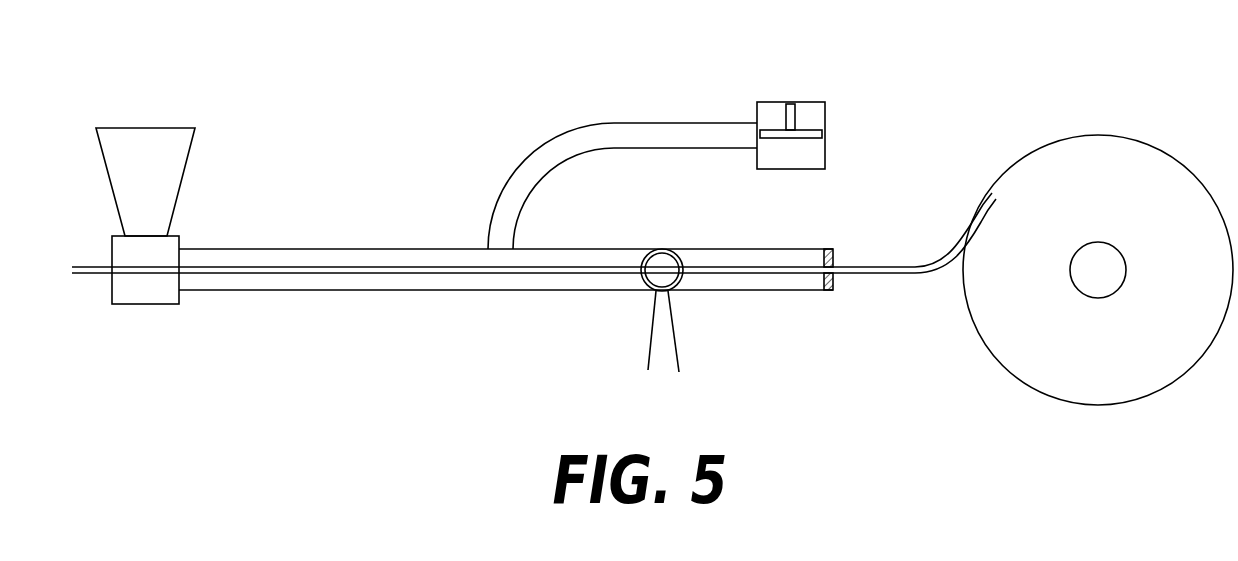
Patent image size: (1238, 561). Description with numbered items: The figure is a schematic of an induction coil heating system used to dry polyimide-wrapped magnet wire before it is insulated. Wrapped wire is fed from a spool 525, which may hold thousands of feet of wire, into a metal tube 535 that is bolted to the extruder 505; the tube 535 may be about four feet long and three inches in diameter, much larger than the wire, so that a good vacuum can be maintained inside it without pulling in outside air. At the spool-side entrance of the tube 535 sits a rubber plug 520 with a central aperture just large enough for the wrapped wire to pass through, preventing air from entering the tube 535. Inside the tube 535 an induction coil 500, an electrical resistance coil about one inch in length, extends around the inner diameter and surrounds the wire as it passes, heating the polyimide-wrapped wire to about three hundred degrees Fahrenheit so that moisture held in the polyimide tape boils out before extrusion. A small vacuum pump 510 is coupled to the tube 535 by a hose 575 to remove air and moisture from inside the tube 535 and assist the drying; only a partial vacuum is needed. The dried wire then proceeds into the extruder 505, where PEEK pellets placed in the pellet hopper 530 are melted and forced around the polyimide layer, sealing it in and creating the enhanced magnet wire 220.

The enhanced magnet wire 220 is at (386, 266).
The induction coil 500 is at (683, 256).
The extruder 505 is at (149, 286).
The vacuum pump 510 is at (808, 110).
The rubber plug 520 is at (830, 295).
The spool 525 is at (1063, 178).
The pellet hopper 530 is at (140, 127).
The metal tube 535 is at (270, 248).
The hose 575 is at (662, 122).